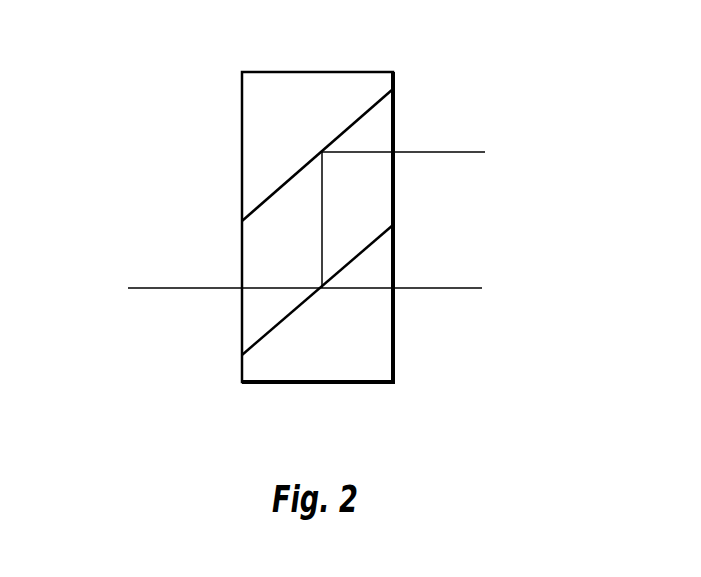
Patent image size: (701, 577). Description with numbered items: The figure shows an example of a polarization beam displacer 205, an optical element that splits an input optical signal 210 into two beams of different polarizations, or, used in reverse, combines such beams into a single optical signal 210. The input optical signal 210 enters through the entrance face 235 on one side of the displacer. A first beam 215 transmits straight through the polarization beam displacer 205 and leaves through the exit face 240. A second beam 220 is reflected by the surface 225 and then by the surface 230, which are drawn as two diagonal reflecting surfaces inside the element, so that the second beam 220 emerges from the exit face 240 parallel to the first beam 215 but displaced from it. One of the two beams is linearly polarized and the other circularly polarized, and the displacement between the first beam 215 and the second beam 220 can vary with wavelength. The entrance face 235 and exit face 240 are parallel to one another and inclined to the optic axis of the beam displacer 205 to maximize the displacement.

The polarization beam displacer 205 is at (157, 45).
The input optical signal 210 is at (181, 285).
The first beam 215 is at (433, 292).
The second beam 220 is at (325, 192).
The surface 225 is at (295, 312).
The surface 230 is at (358, 113).
The entrance face 235 is at (240, 158).
The exit face 240 is at (400, 328).